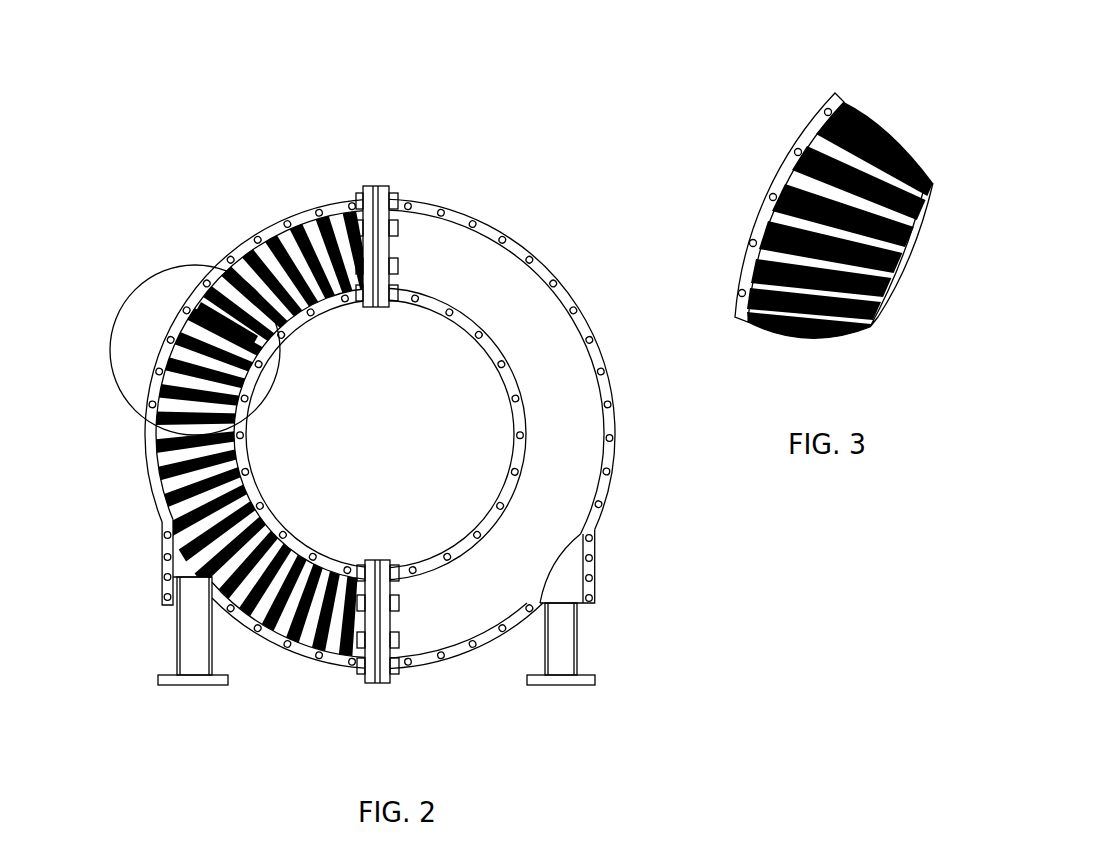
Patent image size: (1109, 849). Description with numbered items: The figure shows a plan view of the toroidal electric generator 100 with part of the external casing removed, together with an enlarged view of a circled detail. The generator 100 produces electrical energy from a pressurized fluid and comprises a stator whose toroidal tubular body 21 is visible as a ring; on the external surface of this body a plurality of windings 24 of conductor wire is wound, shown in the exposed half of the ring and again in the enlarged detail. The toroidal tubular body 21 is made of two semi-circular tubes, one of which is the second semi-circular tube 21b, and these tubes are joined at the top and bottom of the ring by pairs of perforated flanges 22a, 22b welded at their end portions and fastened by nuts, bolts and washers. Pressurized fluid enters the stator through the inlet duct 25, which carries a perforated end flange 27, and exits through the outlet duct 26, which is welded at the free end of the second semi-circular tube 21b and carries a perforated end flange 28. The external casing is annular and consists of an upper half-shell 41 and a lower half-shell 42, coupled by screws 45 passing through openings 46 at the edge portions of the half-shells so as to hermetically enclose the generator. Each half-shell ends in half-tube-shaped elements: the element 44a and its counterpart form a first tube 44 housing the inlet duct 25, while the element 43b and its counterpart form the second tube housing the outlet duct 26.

In FIG. 2, the toroidal electric generator 100 is at (377, 420).
In FIG. 2, the toroidal tubular body 21 is at (275, 230).
In FIG. 2, the second semi-circular tube 21b is at (200, 305).
In FIG. 3, the second semi-circular tube 21b is at (840, 140).
In FIG. 2, the perforated flange 22a is at (390, 185).
In FIG. 2, the perforated flange 22b is at (367, 185).
In FIG. 2, the windings 24 is at (167, 478).
In FIG. 3, the windings 24 is at (810, 333).
In FIG. 2, the inlet duct 25 is at (566, 640).
In FIG. 2, the outlet duct 26 is at (188, 638).
In FIG. 2, the perforated end flange 27 is at (565, 687).
In FIG. 2, the perforated end flange 28 is at (195, 686).
In FIG. 2, the upper half-shell 41 is at (530, 312).
In FIG. 2, the lower half-shell 42 is at (160, 350).
In FIG. 3, the lower half-shell 42 is at (773, 173).
In FIG. 2, the half-tube-shaped element 43b is at (163, 595).
In FIG. 2, the first tube 44 is at (600, 562).
In FIG. 2, the half-tube-shaped element 44a is at (565, 578).
In FIG. 2, the screws 45 is at (506, 236).
In FIG. 2, the openings 46 is at (316, 210).
In FIG. 3, the openings 46 is at (739, 291).